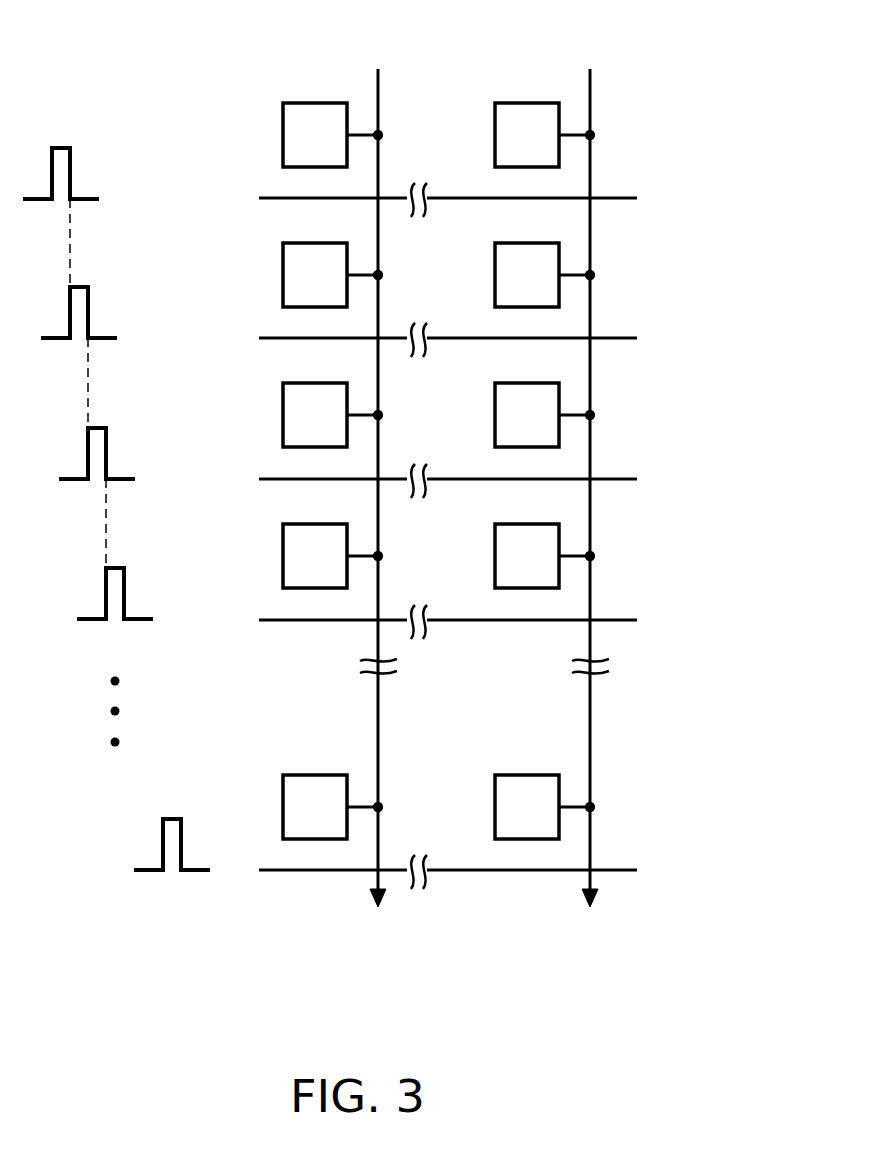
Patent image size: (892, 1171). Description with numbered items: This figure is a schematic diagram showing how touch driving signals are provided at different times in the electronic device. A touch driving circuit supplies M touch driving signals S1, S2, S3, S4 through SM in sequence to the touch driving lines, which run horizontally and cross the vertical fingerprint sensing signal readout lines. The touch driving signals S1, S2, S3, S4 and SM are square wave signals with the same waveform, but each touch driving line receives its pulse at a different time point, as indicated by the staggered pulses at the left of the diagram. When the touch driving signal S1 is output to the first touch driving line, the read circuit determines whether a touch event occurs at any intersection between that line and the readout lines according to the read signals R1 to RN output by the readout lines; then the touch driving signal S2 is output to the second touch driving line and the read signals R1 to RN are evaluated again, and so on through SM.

The touch driving signal S1 is at (73, 161).
The touch driving signal S2 is at (91, 300).
The touch driving signal S3 is at (109, 441).
The touch driving signal S4 is at (127, 581).
The touch driving signal SM is at (184, 832).
The read signal R1 is at (378, 934).
The read signal RN is at (591, 934).